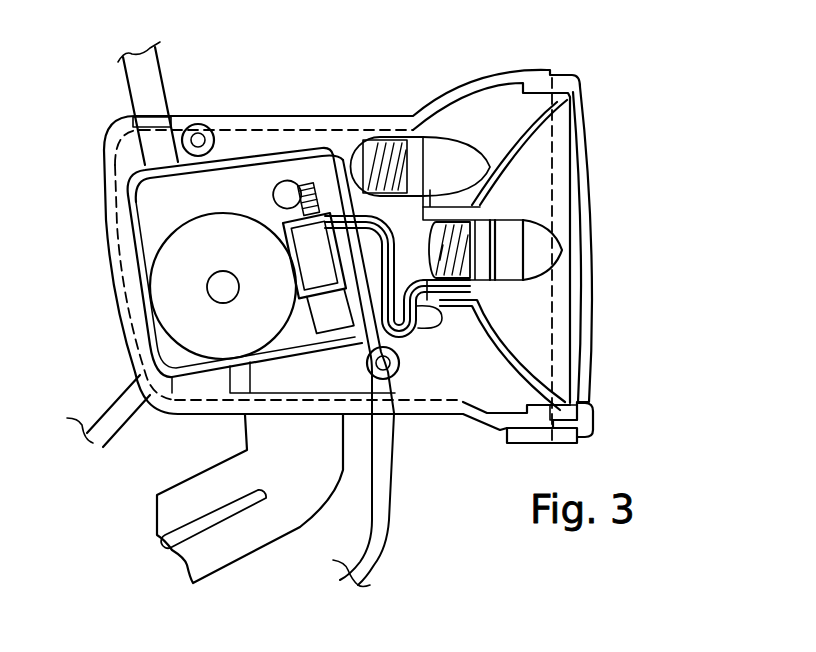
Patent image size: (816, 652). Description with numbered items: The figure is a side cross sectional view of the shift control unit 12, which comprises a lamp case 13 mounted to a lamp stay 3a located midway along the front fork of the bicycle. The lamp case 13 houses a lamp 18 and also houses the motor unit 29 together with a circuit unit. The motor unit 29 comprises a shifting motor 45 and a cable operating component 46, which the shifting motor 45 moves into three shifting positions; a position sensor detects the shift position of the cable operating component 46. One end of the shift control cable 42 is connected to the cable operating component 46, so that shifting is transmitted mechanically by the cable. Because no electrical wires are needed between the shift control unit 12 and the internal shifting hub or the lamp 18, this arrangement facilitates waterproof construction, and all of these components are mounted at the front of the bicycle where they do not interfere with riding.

The shift control unit 12 is at (420, 72).
The lamp case 13 is at (333, 114).
The lamp 18 is at (515, 240).
The motor unit 29 is at (200, 418).
The lamp stay 3a is at (243, 547).
The shift control cable 42 is at (147, 80).
The shifting motor 45 is at (372, 358).
The cable operating component 46 is at (202, 320).